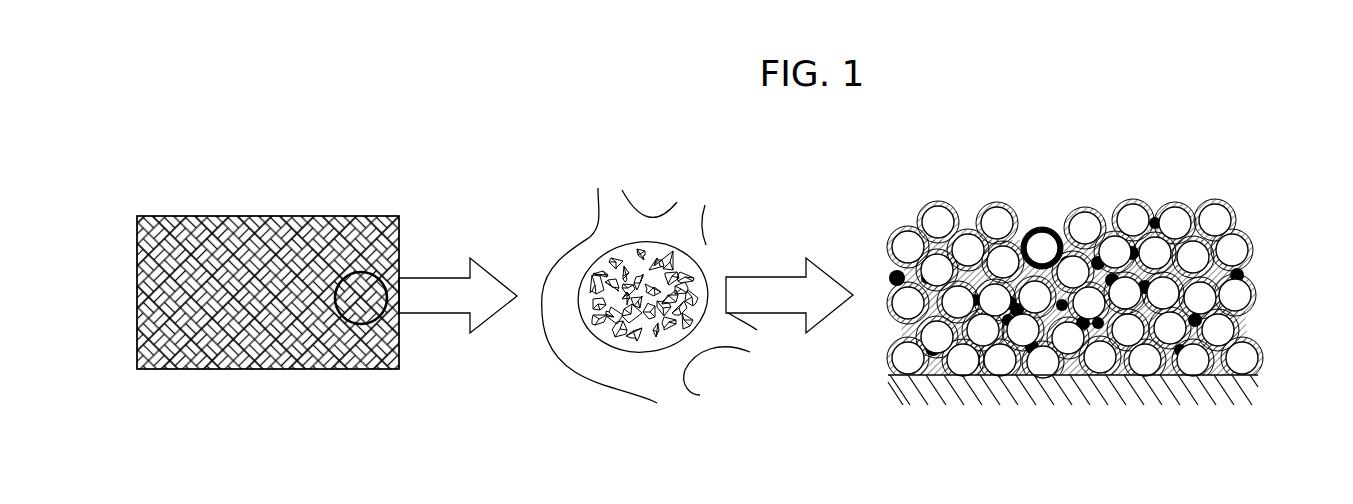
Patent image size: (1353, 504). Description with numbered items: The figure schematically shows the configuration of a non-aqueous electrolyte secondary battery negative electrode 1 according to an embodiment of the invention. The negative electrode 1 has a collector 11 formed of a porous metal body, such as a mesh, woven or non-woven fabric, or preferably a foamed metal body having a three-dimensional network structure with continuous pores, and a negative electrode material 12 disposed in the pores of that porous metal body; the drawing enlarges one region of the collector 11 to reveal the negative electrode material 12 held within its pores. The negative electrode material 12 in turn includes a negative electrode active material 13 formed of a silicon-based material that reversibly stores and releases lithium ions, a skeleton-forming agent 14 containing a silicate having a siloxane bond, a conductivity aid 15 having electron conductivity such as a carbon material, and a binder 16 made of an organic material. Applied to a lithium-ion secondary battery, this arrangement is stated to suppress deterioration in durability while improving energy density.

The non-aqueous electrolyte secondary battery negative electrode 1 is at (347, 138).
The collector 11 is at (248, 216).
The negative electrode material 12 is at (592, 362).
The negative electrode active material 13 is at (1228, 250).
The skeleton-forming agent 14 is at (946, 197).
The conductivity aid 15 is at (1160, 205).
The binder 16 is at (1066, 286).